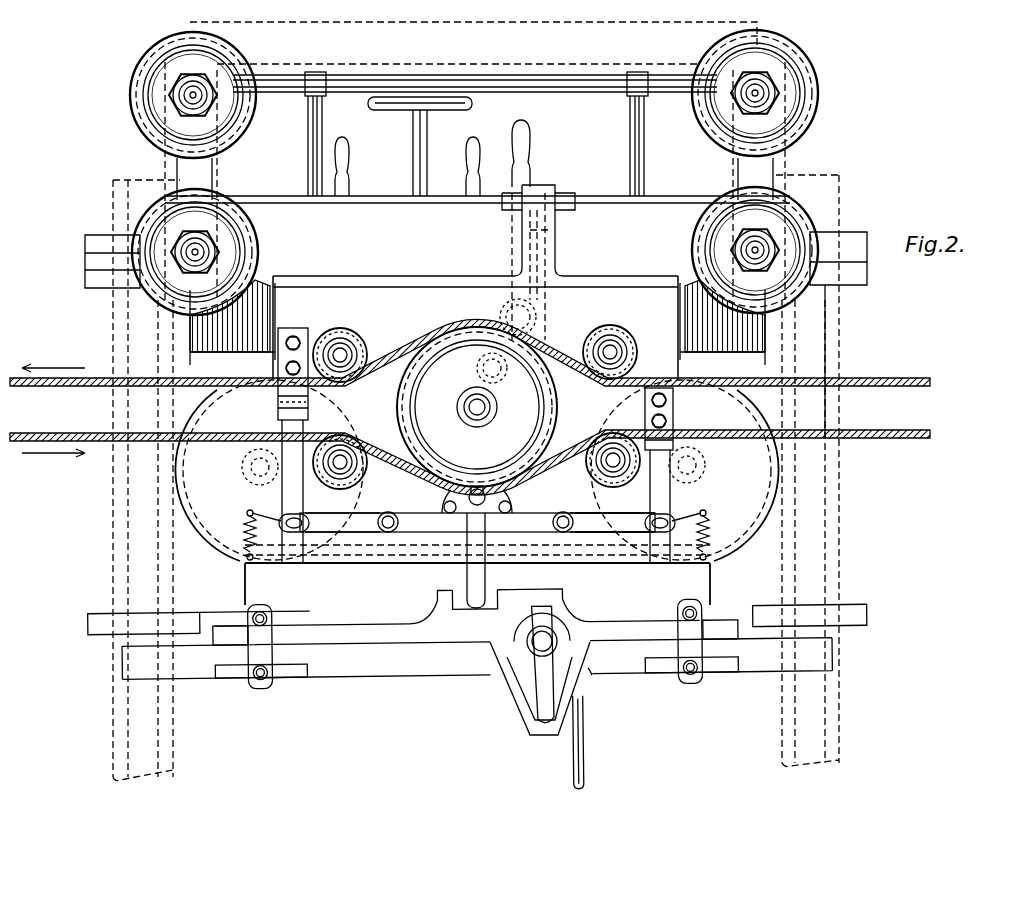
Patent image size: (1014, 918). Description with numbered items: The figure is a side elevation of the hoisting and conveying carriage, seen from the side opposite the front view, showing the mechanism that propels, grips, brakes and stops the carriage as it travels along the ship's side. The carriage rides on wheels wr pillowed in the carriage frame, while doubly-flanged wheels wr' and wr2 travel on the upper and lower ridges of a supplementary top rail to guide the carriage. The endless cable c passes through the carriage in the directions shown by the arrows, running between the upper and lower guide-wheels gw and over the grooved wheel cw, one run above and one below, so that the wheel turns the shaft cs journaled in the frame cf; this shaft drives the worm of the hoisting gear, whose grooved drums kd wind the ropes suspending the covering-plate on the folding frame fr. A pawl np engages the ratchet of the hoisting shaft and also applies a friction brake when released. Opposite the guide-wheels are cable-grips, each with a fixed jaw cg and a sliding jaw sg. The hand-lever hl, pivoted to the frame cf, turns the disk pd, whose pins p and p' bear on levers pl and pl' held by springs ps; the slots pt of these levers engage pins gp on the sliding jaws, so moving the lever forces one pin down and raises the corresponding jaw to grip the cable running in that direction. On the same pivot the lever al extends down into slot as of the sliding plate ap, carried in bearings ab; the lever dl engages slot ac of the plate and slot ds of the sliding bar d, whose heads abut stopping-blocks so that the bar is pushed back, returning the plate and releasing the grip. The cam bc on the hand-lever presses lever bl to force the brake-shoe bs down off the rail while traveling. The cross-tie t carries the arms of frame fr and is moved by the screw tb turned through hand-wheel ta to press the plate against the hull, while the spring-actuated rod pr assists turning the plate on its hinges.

The doubly-flanged wheel wr2 is at (160, 112).
The doubly-flanged wheel wr' is at (477, 242).
The wheel wr is at (477, 477).
The folding frame fr is at (110, 548).
The cross-tie t is at (86, 622).
The sliding plate ap is at (312, 632).
The bearings ab is at (255, 672).
The sliding bar d is at (392, 676).
The frame cf is at (478, 700).
The slot ds is at (532, 718).
The lever dl is at (552, 652).
The slot ac is at (560, 628).
The spring-actuated rod pr is at (584, 745).
The slot as is at (453, 594).
The lever al is at (486, 582).
The pin p is at (477, 506).
The disk pd is at (512, 506).
The pivot pe is at (470, 504).
The pin p' is at (488, 528).
The lever pl is at (393, 535).
The lever pl' is at (612, 535).
The slots pt is at (312, 528).
The pins gp is at (300, 516).
The sliding jaw sg is at (280, 480).
The springs ps is at (245, 548).
The guide-wheels gw is at (362, 338).
The fixed jaw cg is at (306, 330).
The drums kd is at (705, 345).
The endless cable c is at (885, 376).
The grooved wheel cw is at (477, 407).
The shaft cs is at (487, 406).
The lever bl is at (510, 366).
The cam bc is at (545, 338).
The brake-shoe bs is at (562, 208).
The hand-lever hl is at (525, 135).
The knob mk is at (472, 152).
The screw tb is at (413, 130).
The hand-wheel ta is at (470, 107).
The pawl np is at (346, 146).